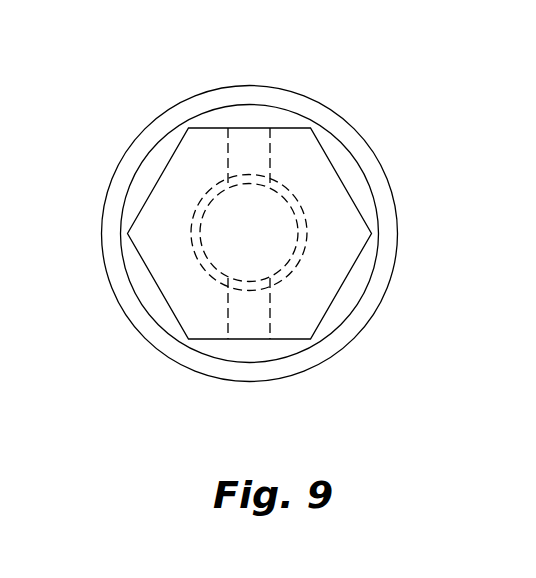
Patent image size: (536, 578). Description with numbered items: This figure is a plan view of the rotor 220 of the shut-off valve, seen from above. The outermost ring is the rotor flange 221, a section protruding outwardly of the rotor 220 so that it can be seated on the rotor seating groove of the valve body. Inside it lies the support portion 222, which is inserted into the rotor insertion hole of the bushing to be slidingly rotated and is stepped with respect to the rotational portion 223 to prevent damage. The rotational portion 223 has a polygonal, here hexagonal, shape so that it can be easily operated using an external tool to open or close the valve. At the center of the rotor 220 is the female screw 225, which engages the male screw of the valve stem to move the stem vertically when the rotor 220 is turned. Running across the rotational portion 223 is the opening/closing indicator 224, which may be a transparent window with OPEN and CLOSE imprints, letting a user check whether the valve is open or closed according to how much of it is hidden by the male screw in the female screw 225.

The rotor 220 is at (260, 240).
The rotor flange 221 is at (328, 345).
The support portion 222 is at (350, 290).
The rotational portion 223 is at (333, 218).
The opening/closing indicator 224 is at (248, 323).
The female screw 225 is at (285, 202).